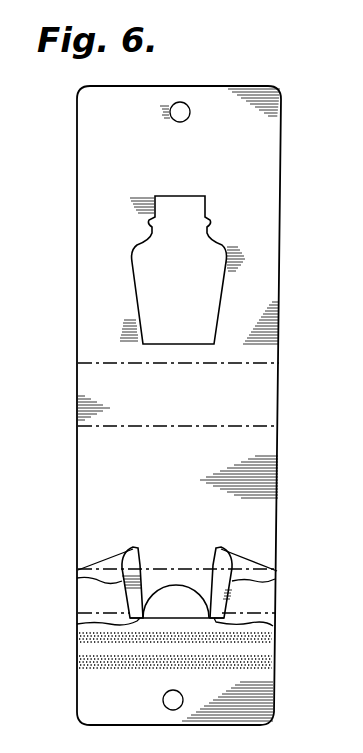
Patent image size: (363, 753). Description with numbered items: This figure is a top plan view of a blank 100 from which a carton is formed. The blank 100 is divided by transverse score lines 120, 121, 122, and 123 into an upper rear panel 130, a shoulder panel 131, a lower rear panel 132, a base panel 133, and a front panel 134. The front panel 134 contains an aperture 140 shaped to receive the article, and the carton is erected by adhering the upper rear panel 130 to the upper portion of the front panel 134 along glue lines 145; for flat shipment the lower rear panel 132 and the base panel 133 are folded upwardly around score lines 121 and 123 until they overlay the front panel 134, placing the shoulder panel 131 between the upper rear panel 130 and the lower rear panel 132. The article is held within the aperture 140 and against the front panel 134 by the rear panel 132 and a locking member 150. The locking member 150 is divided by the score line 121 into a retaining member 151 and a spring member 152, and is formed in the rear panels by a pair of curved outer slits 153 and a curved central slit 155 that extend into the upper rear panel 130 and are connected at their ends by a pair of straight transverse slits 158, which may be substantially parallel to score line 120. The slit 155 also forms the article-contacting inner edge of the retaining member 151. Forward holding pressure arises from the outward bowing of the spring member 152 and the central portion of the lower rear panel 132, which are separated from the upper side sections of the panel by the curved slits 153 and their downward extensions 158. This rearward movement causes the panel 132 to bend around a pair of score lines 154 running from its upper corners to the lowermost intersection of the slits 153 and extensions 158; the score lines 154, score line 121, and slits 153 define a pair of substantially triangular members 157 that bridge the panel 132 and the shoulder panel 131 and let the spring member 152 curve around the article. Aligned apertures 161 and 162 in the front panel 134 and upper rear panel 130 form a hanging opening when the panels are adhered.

The blank 100 is at (286, 318).
The score line 120 is at (78, 615).
The score line 121 is at (148, 567).
The score line 122 is at (208, 427).
The score line 123 is at (193, 364).
The upper rear panel 130 is at (120, 703).
The shoulder panel 131 is at (85, 605).
The lower rear panel 132 is at (156, 515).
The base panel 133 is at (165, 410).
The front panel 134 is at (168, 168).
The aperture 140 is at (208, 207).
The glue lines 145 is at (78, 635).
The locking member 150 is at (188, 549).
The retaining member 151 is at (184, 587).
The spring member 152 is at (166, 565).
The curved outer slits 153 is at (77, 578).
The score lines 154 is at (107, 561).
The curved central slit 155 is at (191, 598).
The triangular members 157 is at (240, 566).
The straight transverse slits 158 is at (77, 624).
The aperture 161 is at (182, 101).
The aperture 162 is at (173, 710).